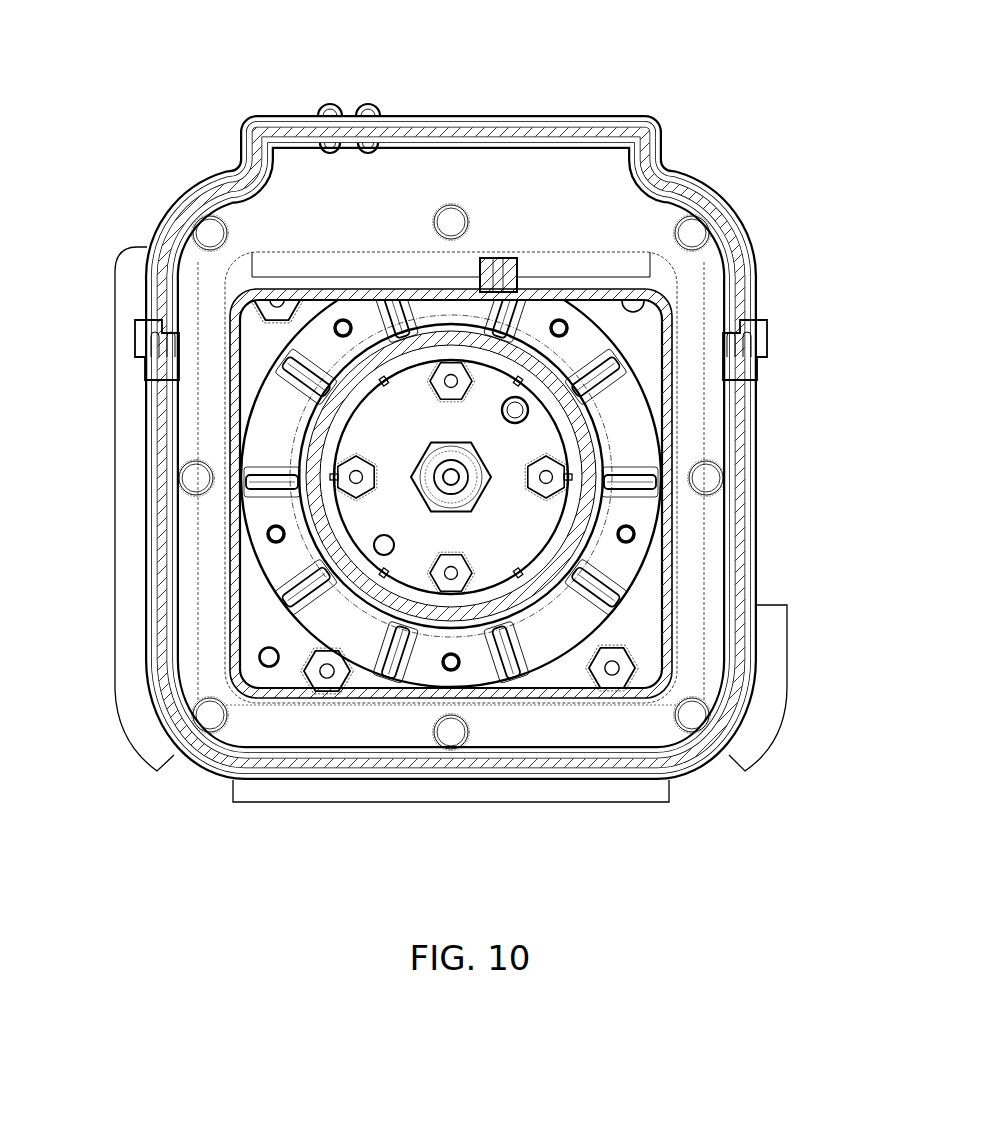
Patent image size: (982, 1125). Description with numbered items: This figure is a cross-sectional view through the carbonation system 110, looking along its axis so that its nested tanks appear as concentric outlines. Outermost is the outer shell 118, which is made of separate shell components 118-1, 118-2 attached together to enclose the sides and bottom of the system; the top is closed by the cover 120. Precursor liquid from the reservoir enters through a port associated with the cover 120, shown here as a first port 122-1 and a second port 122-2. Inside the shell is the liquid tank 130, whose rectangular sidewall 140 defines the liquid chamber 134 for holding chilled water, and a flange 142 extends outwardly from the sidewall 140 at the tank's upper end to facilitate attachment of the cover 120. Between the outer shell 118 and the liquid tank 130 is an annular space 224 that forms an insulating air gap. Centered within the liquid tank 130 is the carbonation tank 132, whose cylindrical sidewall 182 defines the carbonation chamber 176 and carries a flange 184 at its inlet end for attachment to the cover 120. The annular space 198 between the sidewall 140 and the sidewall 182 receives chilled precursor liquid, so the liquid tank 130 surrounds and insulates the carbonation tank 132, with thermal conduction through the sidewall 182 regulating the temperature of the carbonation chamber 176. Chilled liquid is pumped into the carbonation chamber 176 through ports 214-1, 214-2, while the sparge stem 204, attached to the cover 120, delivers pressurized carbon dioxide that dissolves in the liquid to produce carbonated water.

The carbonation system 110 is at (163, 66).
The outer shell 118 is at (757, 530).
The shell component 118-1 is at (730, 208).
The shell component 118-2 is at (697, 760).
The cover 120 is at (608, 313).
The first port 122-1 is at (643, 308).
The second port 122-2 is at (257, 657).
The liquid tank 130 is at (684, 551).
The carbonation tank 132 is at (650, 573).
The liquid chamber 134 is at (616, 639).
The sidewall 140 is at (533, 694).
The flange 142 is at (705, 441).
The carbonation chamber 176 is at (486, 540).
The sidewall 182 is at (393, 603).
The flange 184 is at (625, 422).
The annular space 198 is at (263, 617).
The stem 204 is at (500, 413).
The port 214-1 is at (434, 471).
The port 214-2 is at (373, 541).
The annular space 224 is at (570, 736).